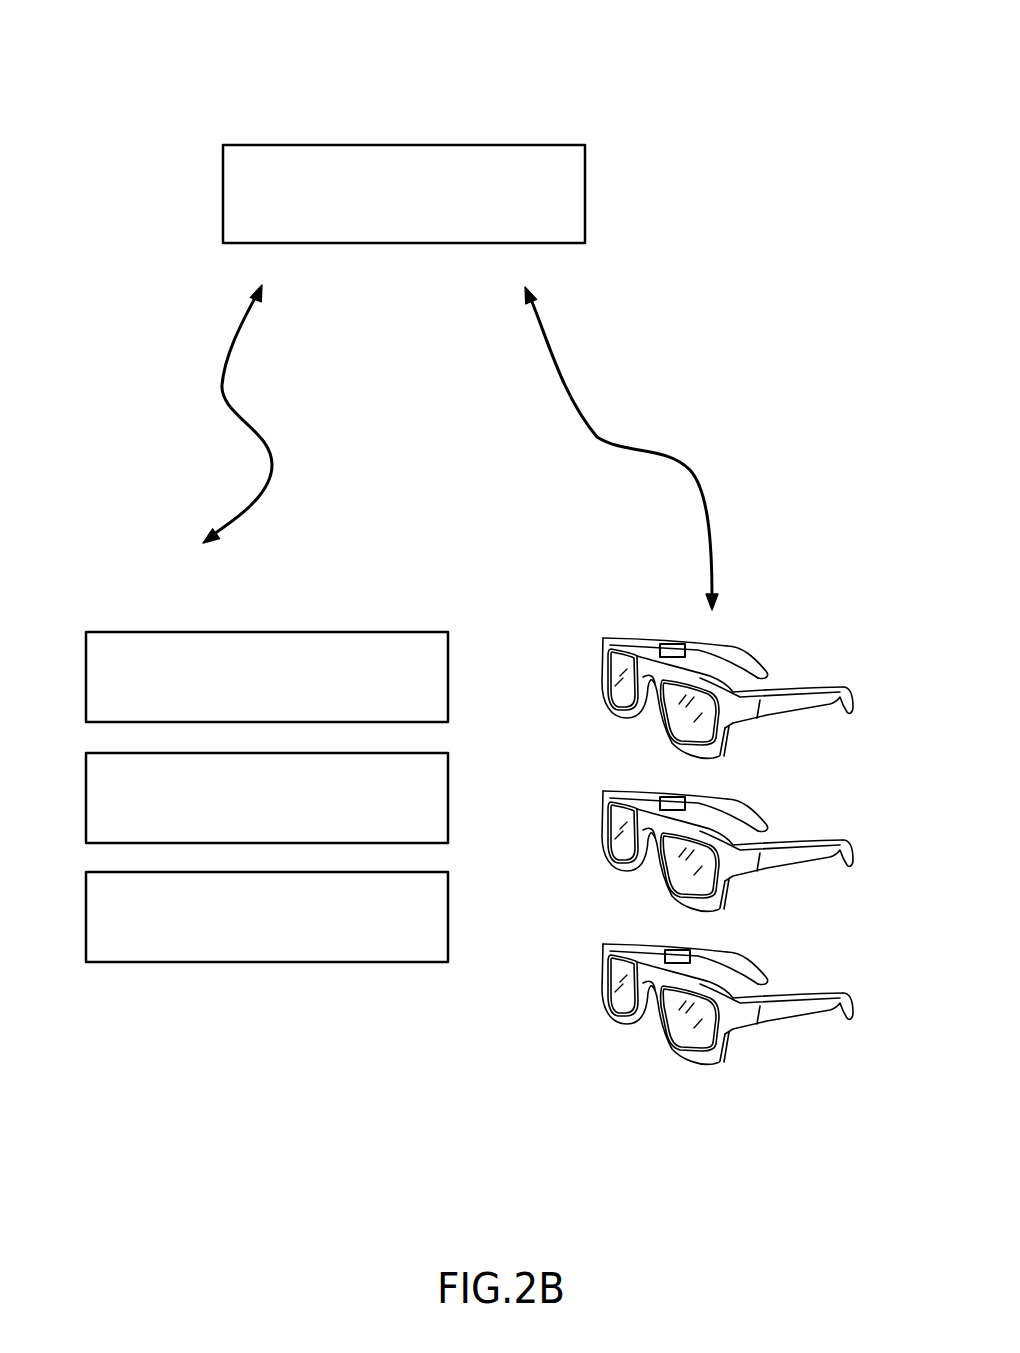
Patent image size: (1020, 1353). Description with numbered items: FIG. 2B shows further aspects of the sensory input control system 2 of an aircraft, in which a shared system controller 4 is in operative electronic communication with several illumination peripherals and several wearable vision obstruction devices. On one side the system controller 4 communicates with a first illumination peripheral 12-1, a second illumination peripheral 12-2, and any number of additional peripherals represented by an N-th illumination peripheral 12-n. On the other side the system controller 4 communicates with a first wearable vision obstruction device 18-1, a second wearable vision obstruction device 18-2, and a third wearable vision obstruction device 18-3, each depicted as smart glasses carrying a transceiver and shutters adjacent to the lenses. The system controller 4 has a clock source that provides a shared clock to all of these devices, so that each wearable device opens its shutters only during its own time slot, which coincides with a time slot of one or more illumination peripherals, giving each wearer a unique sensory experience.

The sensory input control system 2 is at (528, 58).
The system controller 4 is at (544, 207).
The first illumination peripheral 12-1 is at (369, 707).
The second illumination peripheral 12-2 is at (369, 828).
The N-th illumination peripheral 12-n is at (371, 947).
The first wearable vision obstruction device 18-1 is at (753, 660).
The second wearable vision obstruction device 18-2 is at (743, 844).
The third wearable vision obstruction device 18-3 is at (739, 999).